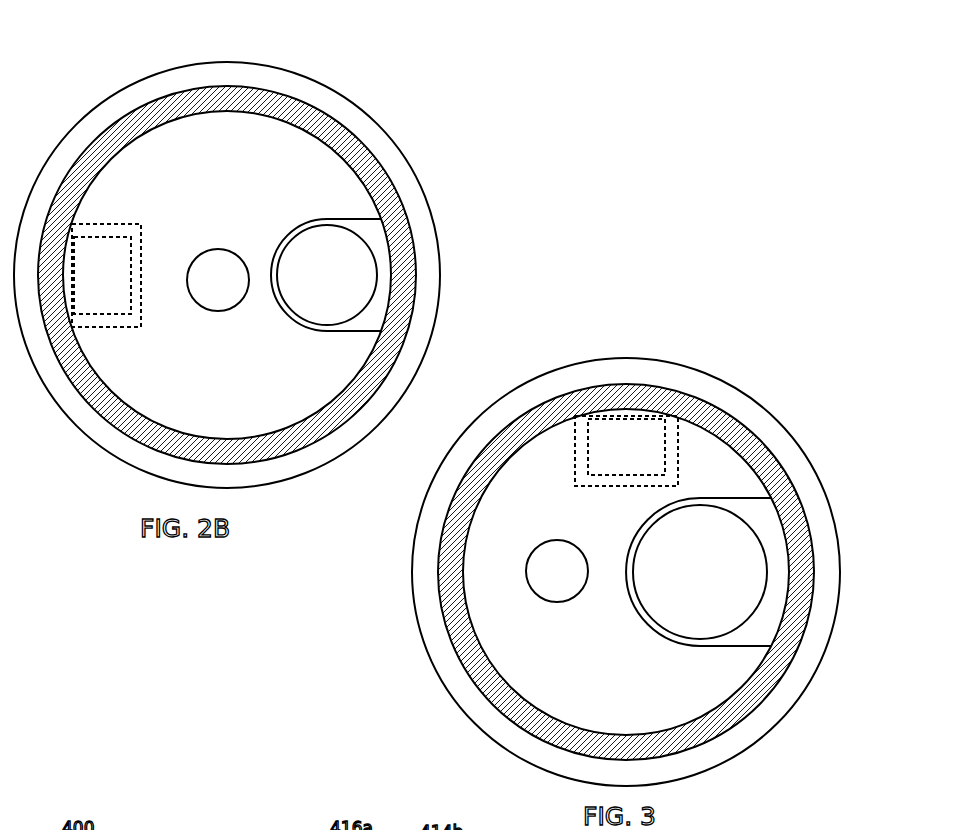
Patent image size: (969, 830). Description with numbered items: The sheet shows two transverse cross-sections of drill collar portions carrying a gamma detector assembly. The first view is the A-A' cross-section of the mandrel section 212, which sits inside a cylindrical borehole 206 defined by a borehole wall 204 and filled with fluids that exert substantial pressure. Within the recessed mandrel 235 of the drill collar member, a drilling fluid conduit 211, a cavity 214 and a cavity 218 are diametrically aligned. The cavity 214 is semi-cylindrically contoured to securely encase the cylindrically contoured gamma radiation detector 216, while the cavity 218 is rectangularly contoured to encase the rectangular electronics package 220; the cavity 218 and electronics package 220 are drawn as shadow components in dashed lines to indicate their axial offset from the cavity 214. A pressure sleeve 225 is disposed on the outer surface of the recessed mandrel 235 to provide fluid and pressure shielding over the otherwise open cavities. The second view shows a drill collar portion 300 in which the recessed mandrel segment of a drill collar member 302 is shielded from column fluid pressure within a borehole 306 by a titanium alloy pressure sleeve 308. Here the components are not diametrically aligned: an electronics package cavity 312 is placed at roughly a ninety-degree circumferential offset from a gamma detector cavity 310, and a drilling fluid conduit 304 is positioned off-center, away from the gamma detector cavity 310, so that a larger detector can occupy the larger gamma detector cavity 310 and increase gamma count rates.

In FIG. 2B, the mandrel section 212 is at (58, 103).
In FIG. 2B, the borehole wall 204 is at (420, 183).
In FIG. 2B, the borehole 206 is at (430, 267).
In FIG. 2B, the pressure sleeve 225 is at (357, 153).
In FIG. 2B, the mandrel 235 is at (270, 157).
In FIG. 2B, the cavity 218 is at (128, 225).
In FIG. 2B, the electronics package 220 is at (111, 315).
In FIG. 2B, the drilling fluid conduit 211 is at (210, 312).
In FIG. 2B, the cavity 214 is at (360, 222).
In FIG. 2B, the gamma radiation detector 216 is at (313, 240).
In FIG. 3, the drill collar portion 300 is at (553, 360).
In FIG. 3, the borehole 306 is at (822, 538).
In FIG. 3, the pressure sleeve 308 is at (745, 435).
In FIG. 3, the drill collar member 302 is at (548, 662).
In FIG. 3, the electronics package cavity 312 is at (568, 467).
In FIG. 3, the drilling fluid conduit 304 is at (570, 601).
In FIG. 3, the gamma detector cavity 310 is at (626, 610).